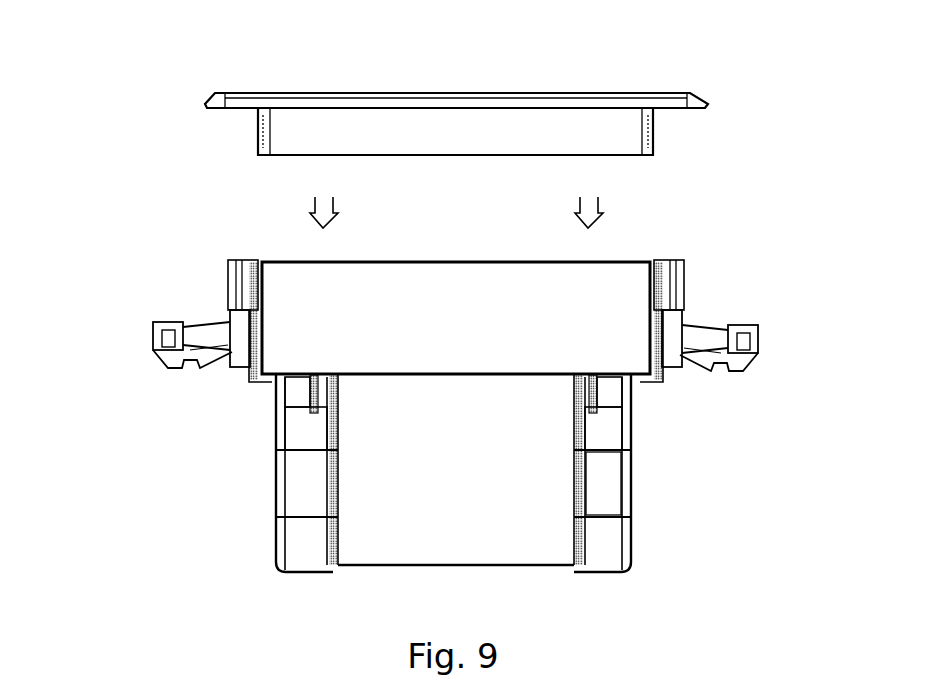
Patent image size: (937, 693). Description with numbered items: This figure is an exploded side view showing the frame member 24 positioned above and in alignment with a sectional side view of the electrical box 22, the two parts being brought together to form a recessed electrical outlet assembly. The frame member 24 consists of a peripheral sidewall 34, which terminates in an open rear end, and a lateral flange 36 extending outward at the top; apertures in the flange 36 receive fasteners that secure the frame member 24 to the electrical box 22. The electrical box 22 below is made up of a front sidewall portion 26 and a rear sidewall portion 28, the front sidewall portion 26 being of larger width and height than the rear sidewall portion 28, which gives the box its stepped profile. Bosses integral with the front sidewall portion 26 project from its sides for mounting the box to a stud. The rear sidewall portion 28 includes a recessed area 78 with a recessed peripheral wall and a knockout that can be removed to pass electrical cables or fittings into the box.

The electrical box 22 is at (138, 273).
The frame member 24 is at (150, 84).
The front sidewall portion 26 is at (478, 326).
The rear sidewall portion 28 is at (478, 470).
The peripheral sidewall 34 is at (470, 143).
The lateral flange 36 is at (522, 95).
The recessed area 78 is at (607, 482).